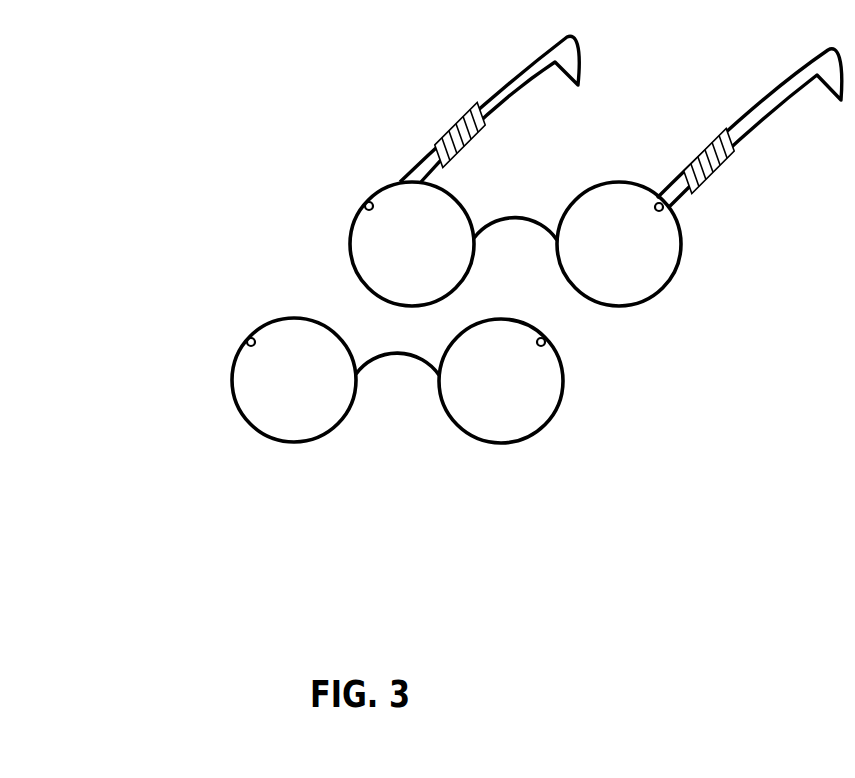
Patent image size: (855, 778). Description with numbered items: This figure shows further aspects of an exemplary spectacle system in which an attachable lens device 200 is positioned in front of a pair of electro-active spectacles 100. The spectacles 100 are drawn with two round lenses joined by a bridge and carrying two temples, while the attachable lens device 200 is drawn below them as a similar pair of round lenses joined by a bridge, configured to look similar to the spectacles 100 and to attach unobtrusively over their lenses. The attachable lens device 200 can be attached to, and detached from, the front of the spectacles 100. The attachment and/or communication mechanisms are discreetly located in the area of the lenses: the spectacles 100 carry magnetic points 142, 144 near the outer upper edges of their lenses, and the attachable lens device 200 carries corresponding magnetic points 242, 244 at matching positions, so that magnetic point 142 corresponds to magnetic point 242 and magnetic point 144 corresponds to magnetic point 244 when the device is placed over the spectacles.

The electro-active spectacles 100 is at (596, 171).
The magnetic point 142 is at (362, 207).
The magnetic point 144 is at (670, 212).
The attachable lens device 200 is at (397, 380).
The magnetic point 242 is at (243, 343).
The magnetic point 244 is at (548, 342).